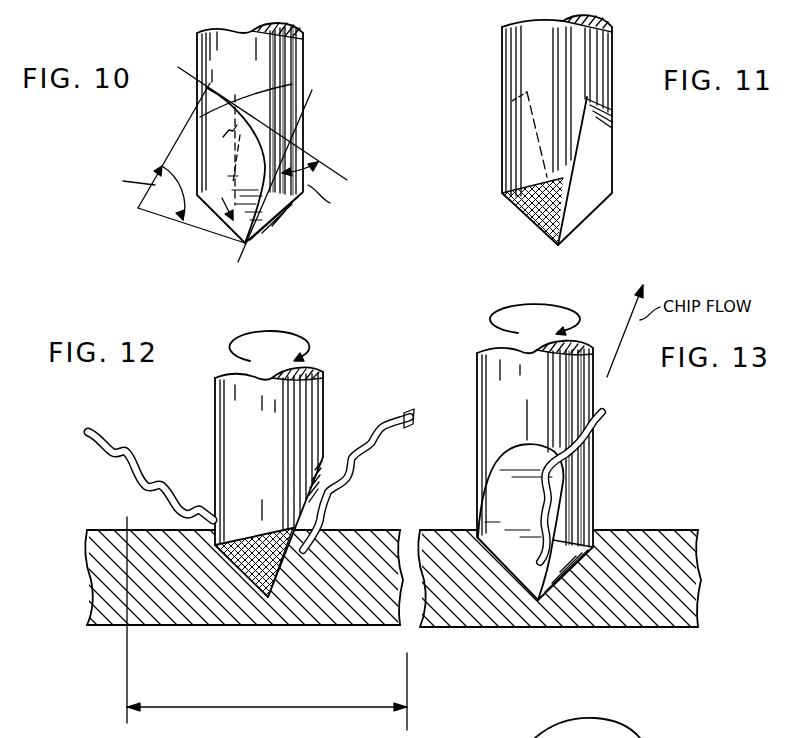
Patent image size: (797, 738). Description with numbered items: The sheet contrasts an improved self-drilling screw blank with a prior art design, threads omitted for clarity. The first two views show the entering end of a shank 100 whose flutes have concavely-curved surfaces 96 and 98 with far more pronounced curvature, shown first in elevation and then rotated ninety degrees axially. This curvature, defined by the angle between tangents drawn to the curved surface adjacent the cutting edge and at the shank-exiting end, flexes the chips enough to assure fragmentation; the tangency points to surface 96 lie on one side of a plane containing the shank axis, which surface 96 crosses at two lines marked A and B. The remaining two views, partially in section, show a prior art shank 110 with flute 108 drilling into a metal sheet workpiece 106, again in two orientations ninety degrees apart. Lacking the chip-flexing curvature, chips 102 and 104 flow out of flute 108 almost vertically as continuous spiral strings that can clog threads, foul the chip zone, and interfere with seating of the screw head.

In FIG. 10, the concavely-curved surface 96 is at (194, 113).
In FIG. 10, the concavely-curved surface 98 is at (288, 90).
In FIG. 11, the concavely-curved surface 98 is at (600, 163).
In FIG. 10, the shank 100 is at (305, 45).
In FIG. 11, the shank 100 is at (612, 42).
In FIG. 12, the chip 102 is at (110, 448).
In FIG. 12, the chip 104 is at (373, 422).
In FIG. 13, the chip 104 is at (600, 418).
In FIG. 12, the workpiece 106 is at (327, 465).
In FIG. 13, the workpiece 106 is at (700, 585).
In FIG. 13, the flute 108 is at (510, 507).
In FIG. 12, the shank 110 is at (220, 392).
In FIG. 13, the shank 110 is at (495, 388).